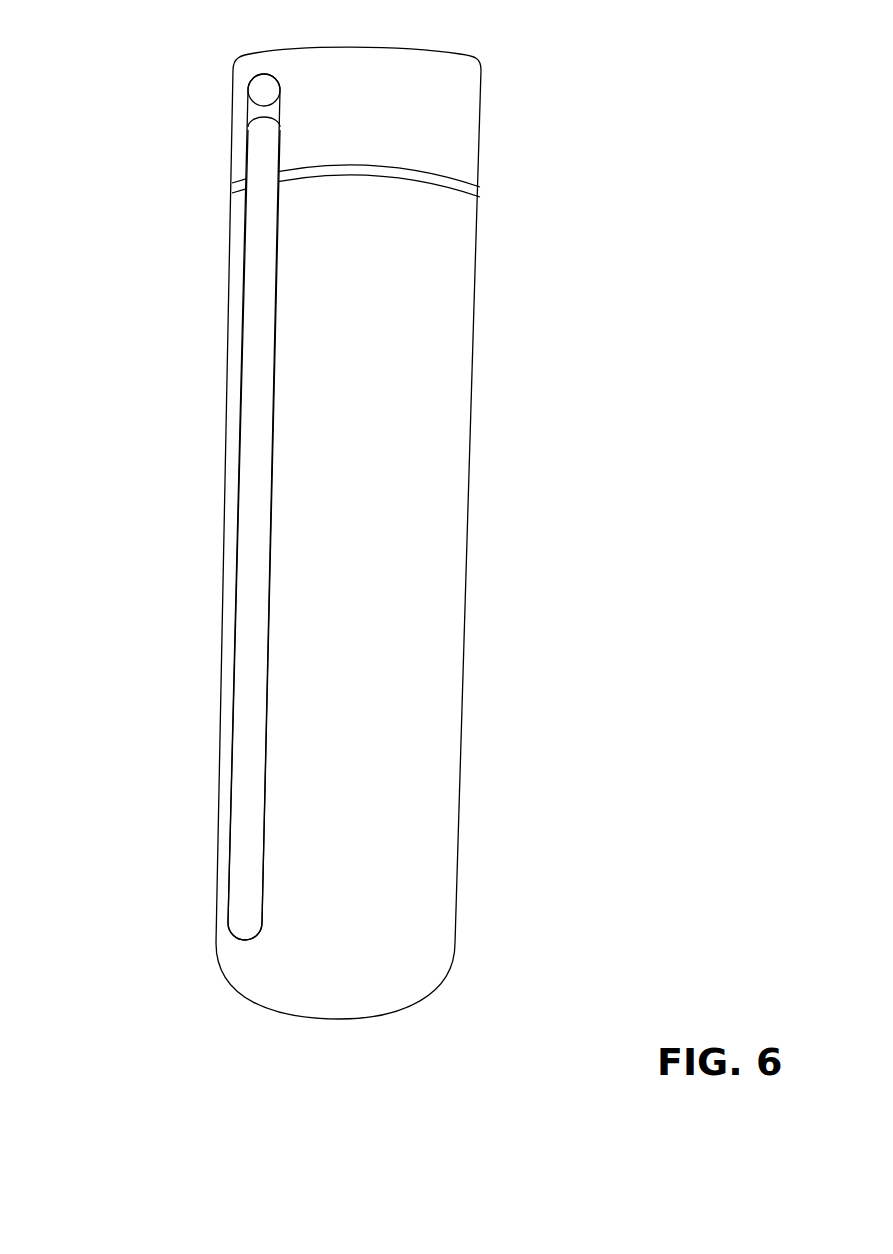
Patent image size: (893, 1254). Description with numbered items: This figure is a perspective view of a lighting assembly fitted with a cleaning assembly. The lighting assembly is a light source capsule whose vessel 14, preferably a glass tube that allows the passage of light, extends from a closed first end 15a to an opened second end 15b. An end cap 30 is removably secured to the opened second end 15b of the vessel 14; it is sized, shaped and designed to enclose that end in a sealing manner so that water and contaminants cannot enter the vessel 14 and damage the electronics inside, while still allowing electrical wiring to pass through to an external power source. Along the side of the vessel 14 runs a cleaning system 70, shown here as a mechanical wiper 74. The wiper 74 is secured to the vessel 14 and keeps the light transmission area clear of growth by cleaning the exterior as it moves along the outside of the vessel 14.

The vessel 14 is at (495, 291).
The closed first end 15a is at (144, 962).
The opened second end 15b is at (145, 50).
The end cap 30 is at (482, 113).
The cleaning system 70 is at (168, 170).
The mechanical wiper 74 is at (258, 338).